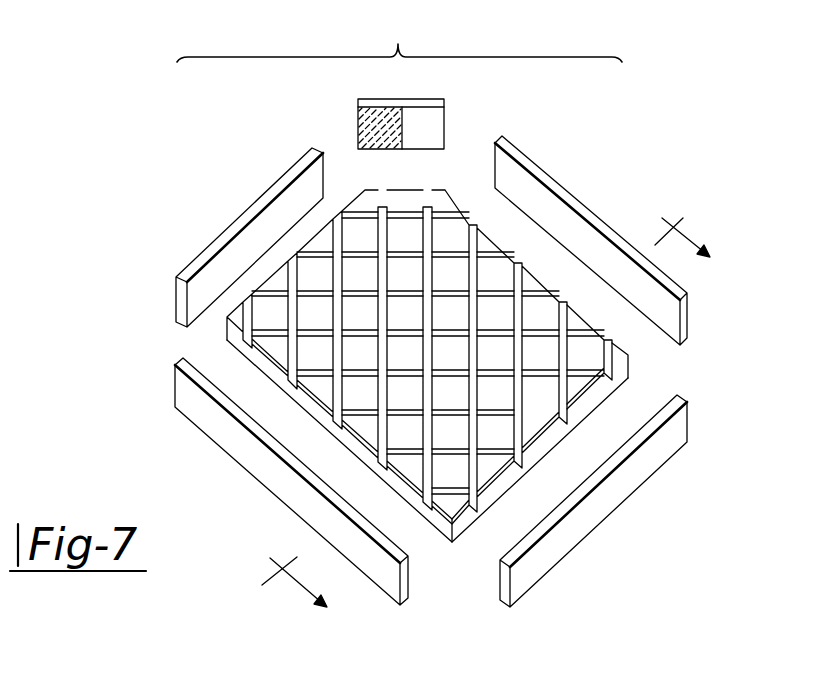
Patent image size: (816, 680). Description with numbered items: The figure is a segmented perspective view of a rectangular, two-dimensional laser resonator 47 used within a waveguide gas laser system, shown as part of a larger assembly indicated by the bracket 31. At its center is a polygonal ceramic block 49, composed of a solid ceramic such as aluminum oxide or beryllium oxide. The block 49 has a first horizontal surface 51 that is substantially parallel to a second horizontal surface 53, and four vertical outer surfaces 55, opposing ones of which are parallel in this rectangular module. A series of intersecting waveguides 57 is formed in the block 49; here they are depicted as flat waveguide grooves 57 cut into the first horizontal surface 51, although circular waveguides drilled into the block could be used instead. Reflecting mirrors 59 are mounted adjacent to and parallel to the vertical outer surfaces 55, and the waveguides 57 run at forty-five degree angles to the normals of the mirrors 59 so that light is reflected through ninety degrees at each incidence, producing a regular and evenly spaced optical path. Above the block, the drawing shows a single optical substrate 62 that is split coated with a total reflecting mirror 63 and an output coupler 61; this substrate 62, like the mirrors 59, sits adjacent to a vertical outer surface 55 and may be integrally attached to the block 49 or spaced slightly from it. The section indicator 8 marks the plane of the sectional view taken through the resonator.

The support frame 31 is at (216, 0).
The laser resonator 47 is at (427, 367).
The polygonal ceramic block 49 is at (628, 356).
The first horizontal surface 51 is at (575, 317).
The second horizontal surface 53 is at (527, 475).
The vertical outer surfaces 55 is at (440, 527).
The intersecting waveguides 57 is at (427, 197).
The reflecting mirrors 59 is at (572, 190).
The output coupler 61 is at (357, 113).
The single optical substrate 62 is at (358, 138).
The total reflecting mirror 63 is at (437, 126).
The section line 8- 8 is at (500, 422).